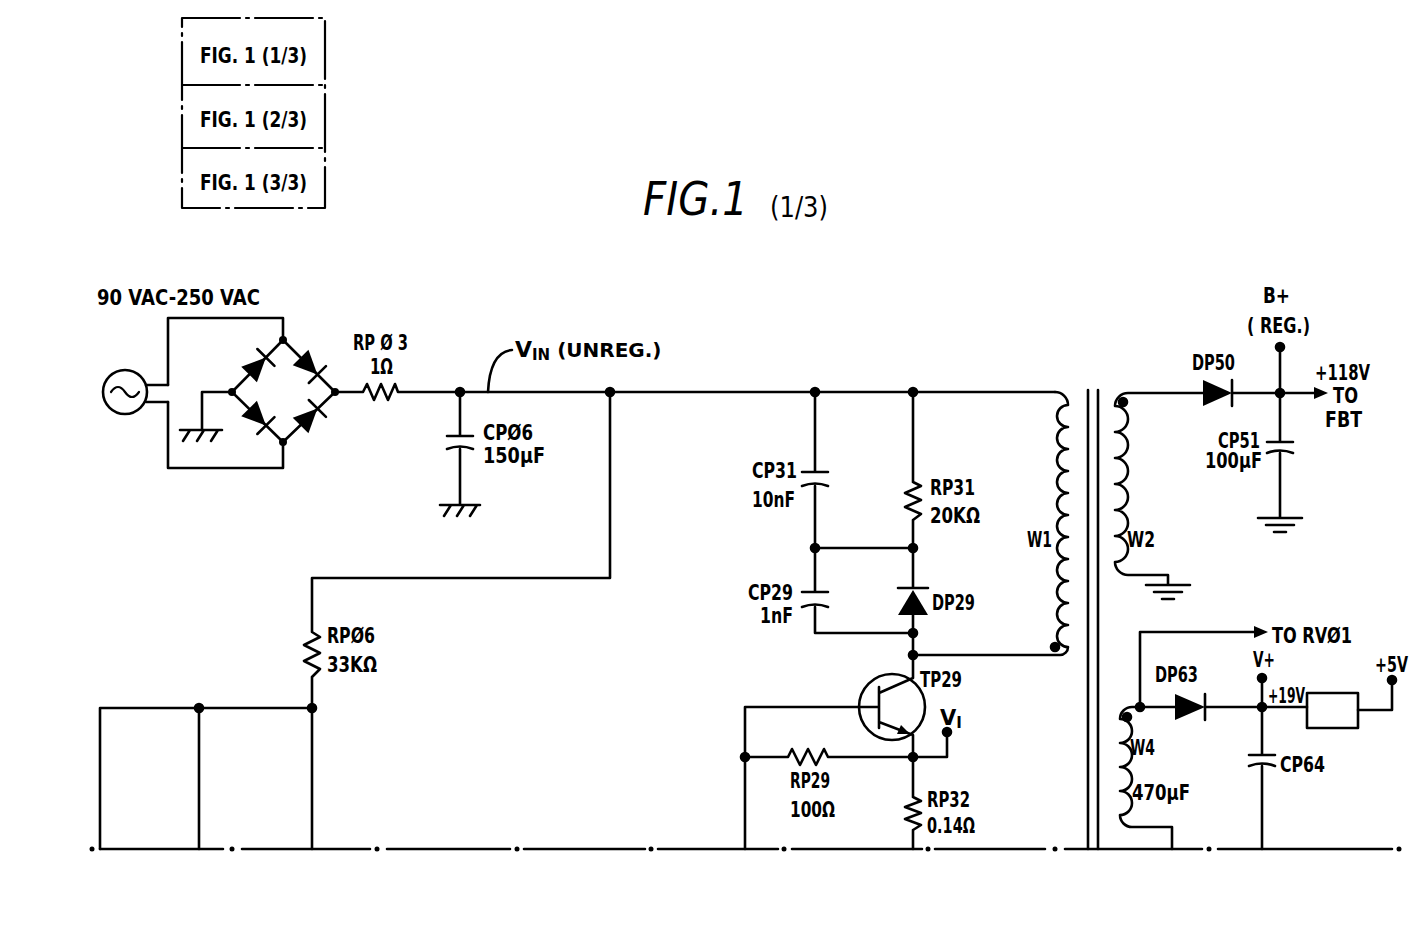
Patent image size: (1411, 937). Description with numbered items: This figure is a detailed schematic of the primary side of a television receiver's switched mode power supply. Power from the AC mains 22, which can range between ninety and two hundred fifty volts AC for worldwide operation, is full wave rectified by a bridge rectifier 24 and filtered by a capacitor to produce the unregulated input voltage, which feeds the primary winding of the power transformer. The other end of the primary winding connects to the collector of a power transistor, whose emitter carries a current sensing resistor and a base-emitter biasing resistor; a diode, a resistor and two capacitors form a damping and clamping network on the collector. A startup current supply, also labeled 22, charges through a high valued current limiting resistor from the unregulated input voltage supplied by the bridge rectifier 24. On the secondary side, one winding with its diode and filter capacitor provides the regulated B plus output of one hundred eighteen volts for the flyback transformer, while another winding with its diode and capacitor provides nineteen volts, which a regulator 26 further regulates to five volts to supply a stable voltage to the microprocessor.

The AC mains 22 is at (150, 411).
The bridge rectifier 24 is at (287, 338).
The regulator 26 is at (1307, 729).